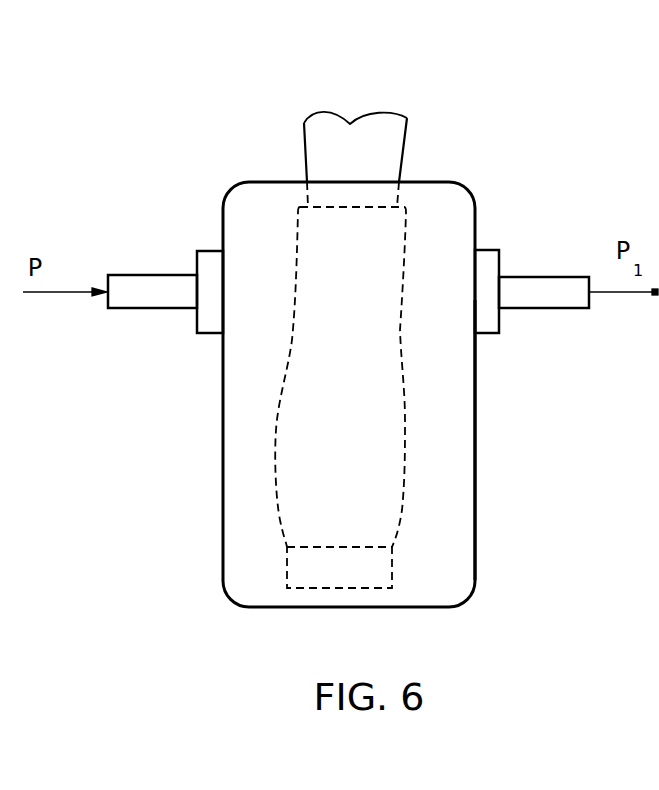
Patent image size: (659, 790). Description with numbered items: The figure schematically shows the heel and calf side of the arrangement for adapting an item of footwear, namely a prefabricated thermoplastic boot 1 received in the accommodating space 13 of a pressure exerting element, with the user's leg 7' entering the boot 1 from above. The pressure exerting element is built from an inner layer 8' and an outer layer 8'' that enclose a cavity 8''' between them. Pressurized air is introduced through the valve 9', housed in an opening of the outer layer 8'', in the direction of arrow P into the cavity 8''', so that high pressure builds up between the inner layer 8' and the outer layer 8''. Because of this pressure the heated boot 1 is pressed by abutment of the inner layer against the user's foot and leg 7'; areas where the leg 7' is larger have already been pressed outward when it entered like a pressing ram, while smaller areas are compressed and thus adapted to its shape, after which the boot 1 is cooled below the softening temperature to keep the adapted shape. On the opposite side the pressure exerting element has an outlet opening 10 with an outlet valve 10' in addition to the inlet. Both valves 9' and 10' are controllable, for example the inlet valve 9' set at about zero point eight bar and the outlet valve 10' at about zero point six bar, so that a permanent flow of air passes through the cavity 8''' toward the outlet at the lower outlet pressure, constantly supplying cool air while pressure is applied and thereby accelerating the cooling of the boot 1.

The boot 1 is at (303, 522).
The leg 7' is at (355, 117).
The inner layer 8' is at (514, 440).
The outer layer 8'' is at (425, 554).
The cavity 8''' is at (441, 489).
The valve 9' is at (162, 272).
The outlet opening 10 is at (533, 239).
The outlet valve 10' is at (520, 316).
The accommodating space 13 is at (361, 452).